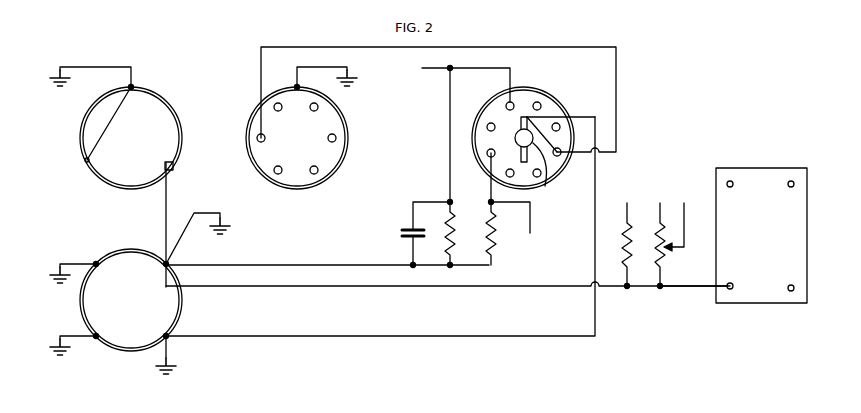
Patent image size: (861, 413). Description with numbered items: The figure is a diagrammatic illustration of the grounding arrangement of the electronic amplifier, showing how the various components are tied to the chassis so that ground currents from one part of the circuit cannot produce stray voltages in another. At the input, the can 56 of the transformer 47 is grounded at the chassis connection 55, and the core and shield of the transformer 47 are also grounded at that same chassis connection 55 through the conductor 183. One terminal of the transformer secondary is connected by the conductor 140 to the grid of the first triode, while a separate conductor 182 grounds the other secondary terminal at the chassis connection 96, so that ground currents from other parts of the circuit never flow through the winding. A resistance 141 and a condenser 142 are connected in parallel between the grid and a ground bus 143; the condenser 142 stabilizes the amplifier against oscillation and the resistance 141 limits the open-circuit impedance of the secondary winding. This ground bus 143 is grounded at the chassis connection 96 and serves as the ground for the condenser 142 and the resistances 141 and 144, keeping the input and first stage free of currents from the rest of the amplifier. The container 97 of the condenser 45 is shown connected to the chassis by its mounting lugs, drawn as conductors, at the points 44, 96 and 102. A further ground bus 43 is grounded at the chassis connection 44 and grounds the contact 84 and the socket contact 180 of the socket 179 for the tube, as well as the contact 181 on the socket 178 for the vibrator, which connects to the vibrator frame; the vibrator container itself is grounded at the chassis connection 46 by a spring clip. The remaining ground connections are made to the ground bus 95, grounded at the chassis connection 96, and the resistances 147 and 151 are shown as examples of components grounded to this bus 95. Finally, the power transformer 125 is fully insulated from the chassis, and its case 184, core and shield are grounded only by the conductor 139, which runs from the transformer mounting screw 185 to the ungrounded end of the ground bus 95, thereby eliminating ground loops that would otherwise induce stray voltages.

The transformer 47 is at (155, 78).
The chassis connection 55 is at (58, 84).
The can 56 is at (181, 109).
The conductor 183 is at (114, 118).
The conductor 182 is at (170, 197).
The condenser 45 is at (98, 240).
The container 97 is at (130, 246).
The chassis connection 96 is at (230, 239).
The chassis connection points 102 is at (58, 291).
The chassis connection 44 is at (182, 379).
The ground bus 143 is at (330, 264).
The ground bus 95 is at (396, 288).
The ground bus 43 is at (313, 46).
The socket 178 is at (350, 139).
The contact 181 is at (257, 138).
The chassis connection 46 is at (356, 88).
The socket 179 is at (554, 97).
The contact 84 is at (546, 188).
The socket contact 180 is at (561, 158).
The conductor 140 is at (440, 66).
The condenser 142 is at (396, 230).
The resistance 141 is at (456, 226).
The resistance 144 is at (496, 229).
The resistance 147 is at (621, 226).
The variable grid resistance 151 is at (667, 258).
The conductor 139 is at (686, 290).
The power transformer 125 is at (726, 134).
The case 184 is at (763, 168).
The transformer mounting screw 185 is at (729, 293).